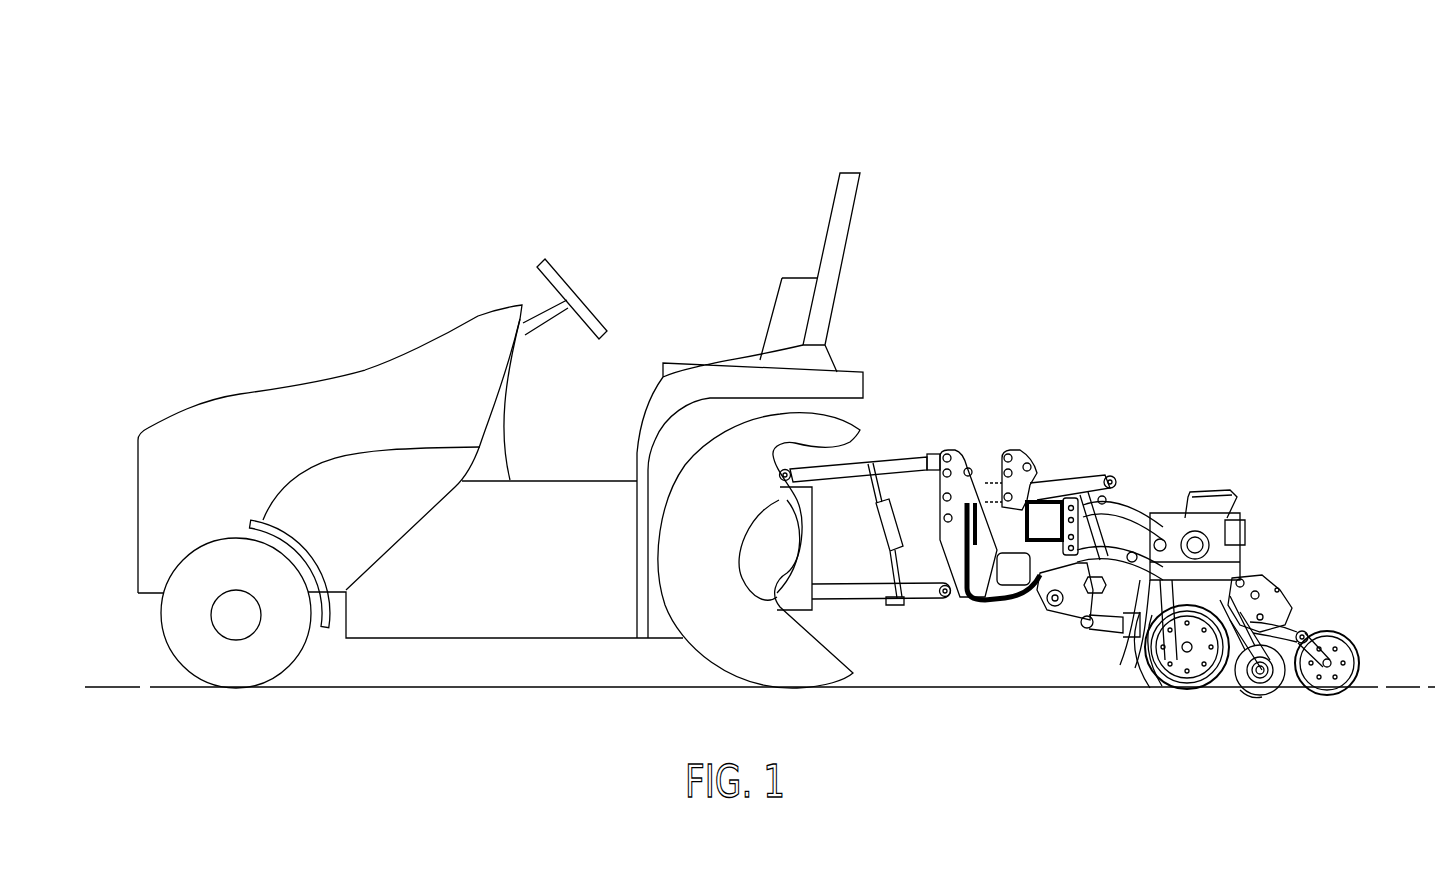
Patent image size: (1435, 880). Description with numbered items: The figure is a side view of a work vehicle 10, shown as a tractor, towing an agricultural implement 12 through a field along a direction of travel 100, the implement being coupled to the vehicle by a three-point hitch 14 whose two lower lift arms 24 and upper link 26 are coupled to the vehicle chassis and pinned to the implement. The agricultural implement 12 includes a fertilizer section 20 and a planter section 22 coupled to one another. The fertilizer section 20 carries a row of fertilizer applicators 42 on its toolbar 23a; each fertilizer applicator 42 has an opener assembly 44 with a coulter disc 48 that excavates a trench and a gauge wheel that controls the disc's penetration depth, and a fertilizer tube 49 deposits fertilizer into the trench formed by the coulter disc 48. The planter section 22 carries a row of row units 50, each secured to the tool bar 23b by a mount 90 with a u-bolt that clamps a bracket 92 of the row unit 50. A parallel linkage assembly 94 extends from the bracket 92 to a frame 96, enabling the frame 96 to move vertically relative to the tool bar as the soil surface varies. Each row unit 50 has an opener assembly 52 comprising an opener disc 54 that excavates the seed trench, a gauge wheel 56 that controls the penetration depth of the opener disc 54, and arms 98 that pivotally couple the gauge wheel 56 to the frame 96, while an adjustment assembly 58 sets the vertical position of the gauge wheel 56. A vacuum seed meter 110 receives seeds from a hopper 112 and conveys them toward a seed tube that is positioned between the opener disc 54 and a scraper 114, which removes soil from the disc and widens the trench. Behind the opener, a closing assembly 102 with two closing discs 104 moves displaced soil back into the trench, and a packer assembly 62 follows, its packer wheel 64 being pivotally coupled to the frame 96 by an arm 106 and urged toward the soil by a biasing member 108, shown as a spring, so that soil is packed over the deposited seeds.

The work vehicle 10 is at (278, 341).
The agricultural implement 12 is at (930, 618).
The three-point hitch 14 is at (912, 391).
The fertilizer section 20 is at (976, 445).
The planter section 22 is at (1018, 435).
The toolbar 23a is at (953, 603).
The tool bar 23b is at (1043, 456).
The lower lift arm 24 is at (856, 602).
The upper link 26 is at (900, 460).
The fertilizer applicator 42 is at (1030, 608).
The opener assembly 44 is at (1107, 656).
The coulter disc 48 is at (1097, 648).
The fertilizer tube 49 is at (1130, 696).
The row unit 50 is at (1249, 485).
The opener assembly 52 is at (1157, 697).
The opener disc 54 is at (1225, 681).
The gauge wheel 56 is at (1125, 672).
The adjustment assembly 58 is at (1269, 560).
The packer assembly 62 is at (1341, 625).
The packer wheel 64 is at (1352, 662).
The mount 90 is at (1052, 480).
The bracket 92 is at (1078, 492).
The linkage assembly 94 is at (1115, 505).
The frame 96 is at (1258, 590).
The arms 98 is at (1160, 693).
The direction of travel 100 is at (366, 113).
The closing assembly 102 is at (1278, 703).
The closing disc 104 is at (1253, 690).
The arm 106 is at (1303, 636).
The biasing member 108 is at (1289, 620).
The vacuum seed meter 110 is at (1162, 518).
The hopper 112 is at (1208, 490).
The scraper 114 is at (1240, 578).